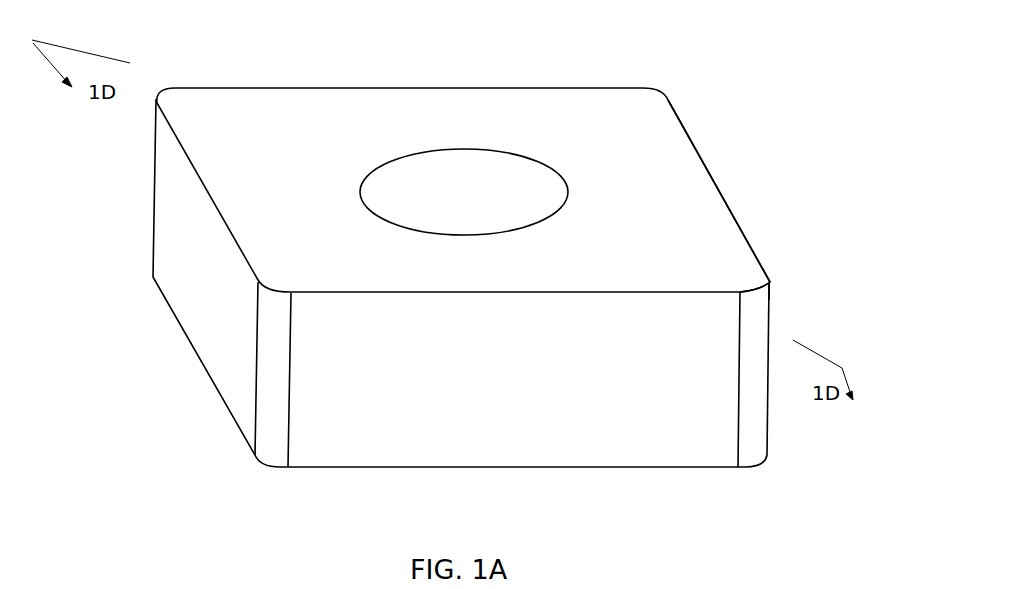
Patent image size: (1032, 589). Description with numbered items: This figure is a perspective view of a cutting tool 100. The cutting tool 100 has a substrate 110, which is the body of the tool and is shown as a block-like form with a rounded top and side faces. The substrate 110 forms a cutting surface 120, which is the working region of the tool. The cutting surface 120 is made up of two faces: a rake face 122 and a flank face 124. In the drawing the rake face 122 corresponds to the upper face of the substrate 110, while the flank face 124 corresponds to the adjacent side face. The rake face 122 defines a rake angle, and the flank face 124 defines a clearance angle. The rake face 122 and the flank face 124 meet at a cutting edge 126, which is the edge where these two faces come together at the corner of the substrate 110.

The cutting tool 100 is at (190, 268).
The substrate 110 is at (650, 153).
The cutting surface 120 is at (753, 330).
The rake face 122 is at (735, 240).
The flank face 124 is at (747, 397).
The cutting edge 126 is at (770, 282).